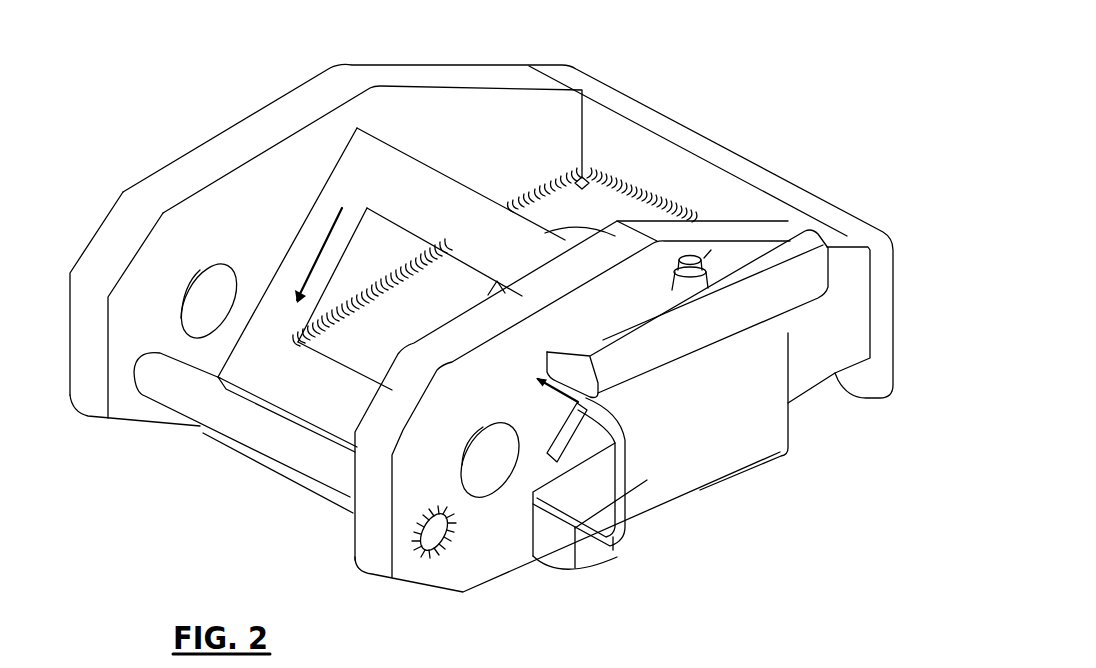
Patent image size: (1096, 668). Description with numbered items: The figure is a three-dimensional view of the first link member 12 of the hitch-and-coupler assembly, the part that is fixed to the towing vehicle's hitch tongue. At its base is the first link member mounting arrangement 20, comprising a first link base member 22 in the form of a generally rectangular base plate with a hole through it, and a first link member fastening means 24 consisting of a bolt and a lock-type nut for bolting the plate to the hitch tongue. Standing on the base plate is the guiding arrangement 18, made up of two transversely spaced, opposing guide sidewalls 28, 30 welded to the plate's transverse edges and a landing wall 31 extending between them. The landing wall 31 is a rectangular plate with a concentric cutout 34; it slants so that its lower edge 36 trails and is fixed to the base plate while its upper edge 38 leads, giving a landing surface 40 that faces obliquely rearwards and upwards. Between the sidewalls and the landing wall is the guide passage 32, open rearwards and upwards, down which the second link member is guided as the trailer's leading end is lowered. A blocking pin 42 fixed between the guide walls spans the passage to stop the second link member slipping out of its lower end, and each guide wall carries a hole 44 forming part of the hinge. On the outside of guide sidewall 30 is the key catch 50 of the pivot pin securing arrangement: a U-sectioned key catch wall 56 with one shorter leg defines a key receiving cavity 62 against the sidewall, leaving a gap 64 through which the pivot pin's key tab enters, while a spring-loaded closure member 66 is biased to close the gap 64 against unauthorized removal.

The first link member 12 is at (700, 68).
The guiding arrangement 18 is at (391, 261).
The first link member mounting arrangement 20 is at (563, 546).
The first link base member 22 is at (593, 212).
The first link member fastening means 24 is at (607, 552).
The guide sidewall 28 is at (93, 263).
The guide sidewall 30 is at (564, 420).
The landing wall 31 is at (420, 178).
The guide passage 32 is at (320, 247).
The concentric cutout 34 is at (372, 314).
The lower edge 36 is at (297, 421).
The upper edge 38 is at (482, 194).
The landing surface 40 is at (287, 403).
The blocking pin 42 is at (210, 428).
The hole 44 is at (463, 460).
The key catch 50 is at (681, 401).
The key catch wall 56 is at (698, 478).
The key receiving cavity 62 is at (570, 483).
The gap 64 is at (581, 402).
The closure member 66 is at (778, 293).